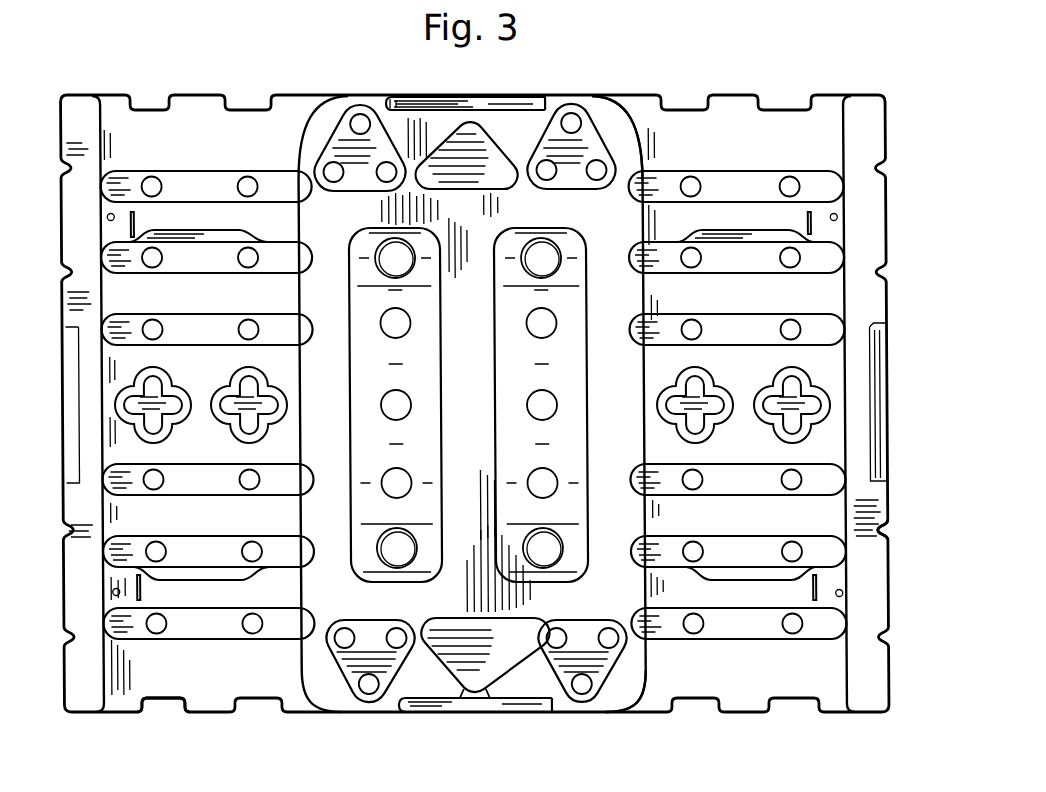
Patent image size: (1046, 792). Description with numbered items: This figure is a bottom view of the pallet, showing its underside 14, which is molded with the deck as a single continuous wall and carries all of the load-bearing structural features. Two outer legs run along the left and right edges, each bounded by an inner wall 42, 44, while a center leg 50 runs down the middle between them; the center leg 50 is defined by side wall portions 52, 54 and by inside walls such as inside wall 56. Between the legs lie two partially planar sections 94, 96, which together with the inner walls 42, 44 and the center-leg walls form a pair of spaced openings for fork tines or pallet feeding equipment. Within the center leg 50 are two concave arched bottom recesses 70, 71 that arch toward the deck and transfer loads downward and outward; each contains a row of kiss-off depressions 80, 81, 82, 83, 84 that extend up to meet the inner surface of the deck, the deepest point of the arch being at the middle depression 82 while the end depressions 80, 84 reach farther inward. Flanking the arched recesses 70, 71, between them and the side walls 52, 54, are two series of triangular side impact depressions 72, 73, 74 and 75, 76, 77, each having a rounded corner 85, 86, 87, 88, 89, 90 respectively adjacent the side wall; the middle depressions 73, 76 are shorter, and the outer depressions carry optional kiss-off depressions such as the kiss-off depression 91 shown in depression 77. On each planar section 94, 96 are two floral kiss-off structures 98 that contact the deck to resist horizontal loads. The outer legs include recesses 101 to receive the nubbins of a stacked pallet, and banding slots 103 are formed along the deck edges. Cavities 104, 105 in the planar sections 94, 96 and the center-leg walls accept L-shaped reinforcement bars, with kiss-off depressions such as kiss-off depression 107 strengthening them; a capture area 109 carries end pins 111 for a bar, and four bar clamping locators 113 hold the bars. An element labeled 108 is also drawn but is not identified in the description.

The underside 14 is at (479, 321).
The inner wall 42 is at (852, 94).
The inner wall 44 is at (134, 210).
The center leg 50 is at (457, 610).
The side wall portion 52 is at (390, 706).
The side wall portion 54 is at (465, 86).
The inside wall 56 is at (651, 233).
The arched bottom recess 70 is at (562, 135).
The arched bottom recess 71 is at (432, 252).
The triangular side impact depression 72 is at (350, 126).
The triangular side impact depression 73 is at (500, 145).
The triangular side impact depression 74 is at (649, 150).
The triangular side impact depression 75 is at (357, 652).
The triangular side impact depression 76 is at (470, 662).
The triangular side impact depression 77 is at (563, 670).
The kiss-off depression 80 is at (641, 252).
The kiss-off depression 81 is at (557, 326).
The kiss-off depression 82 is at (554, 406).
The kiss-off depression 83 is at (557, 486).
The kiss-off depression 84 is at (842, 594).
The rounded corner 85 is at (393, 98).
The rounded corner 86 is at (468, 124).
The rounded corner 87 is at (621, 103).
The rounded corner 88 is at (367, 694).
The rounded corner 89 is at (490, 706).
The rounded corner 90 is at (584, 692).
The kiss-off depression 91 is at (631, 692).
The partially planar section 94 is at (766, 150).
The partially planar section 96 is at (219, 150).
The floral kiss-off structure 98 is at (806, 414).
The recess 101 is at (886, 375).
The banding slot 103 is at (165, 706).
The cavity 104 is at (748, 178).
The cavity 105 is at (208, 178).
The kiss-off depression 107 is at (251, 177).
The bore 108 is at (694, 177).
The capture area 109 is at (155, 177).
The end pin 111 is at (112, 235).
The bar clamping locator 113 is at (892, 538).